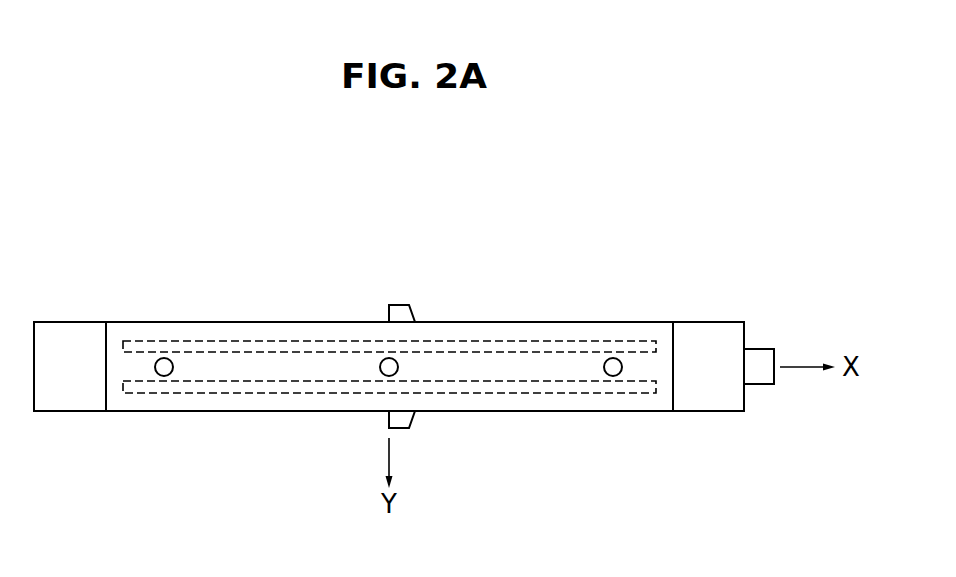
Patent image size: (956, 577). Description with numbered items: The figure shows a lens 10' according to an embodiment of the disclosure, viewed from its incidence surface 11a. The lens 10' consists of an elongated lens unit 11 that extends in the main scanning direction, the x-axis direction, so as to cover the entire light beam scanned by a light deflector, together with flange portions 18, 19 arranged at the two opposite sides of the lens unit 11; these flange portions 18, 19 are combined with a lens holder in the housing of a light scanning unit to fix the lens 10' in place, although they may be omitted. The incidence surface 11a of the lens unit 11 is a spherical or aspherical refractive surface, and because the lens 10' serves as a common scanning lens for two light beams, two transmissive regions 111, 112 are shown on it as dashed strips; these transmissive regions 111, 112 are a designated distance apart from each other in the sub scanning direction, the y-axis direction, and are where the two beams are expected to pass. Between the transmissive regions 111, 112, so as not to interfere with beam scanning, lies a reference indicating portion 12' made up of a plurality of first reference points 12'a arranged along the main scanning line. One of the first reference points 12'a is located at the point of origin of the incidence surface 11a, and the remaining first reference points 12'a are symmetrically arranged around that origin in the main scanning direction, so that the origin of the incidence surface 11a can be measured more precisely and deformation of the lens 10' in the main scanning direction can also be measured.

The lens 10' is at (404, 373).
The lens unit 11 is at (554, 485).
The incidence surface 11a is at (528, 405).
The reference indicating portion 12' is at (368, 334).
The first reference points 12'a is at (390, 318).
The flange portion 18 is at (91, 405).
The flange portion 19 is at (728, 405).
The transmissive region 111 is at (224, 353).
The transmissive region 112 is at (304, 393).